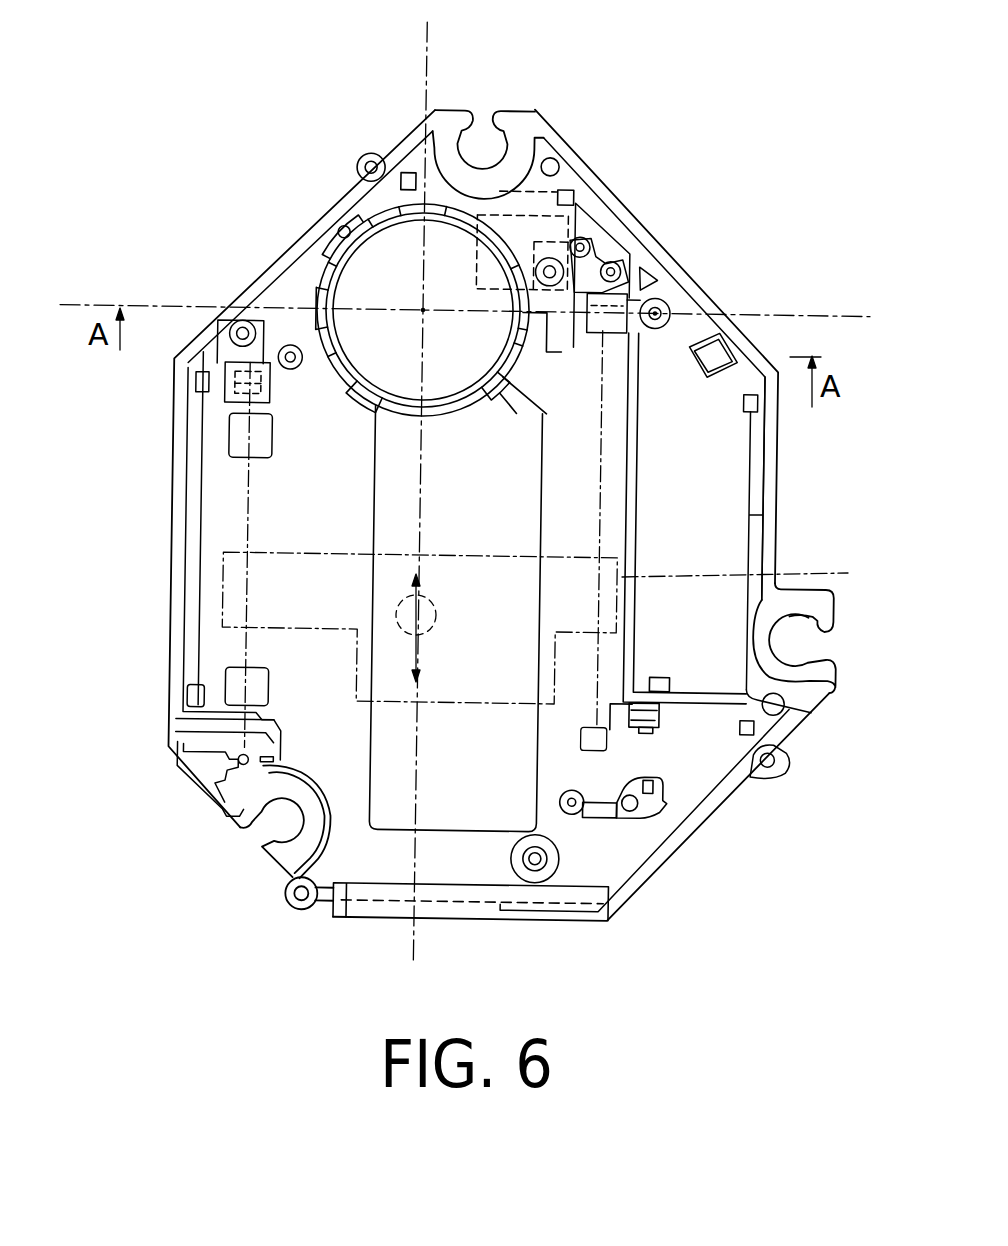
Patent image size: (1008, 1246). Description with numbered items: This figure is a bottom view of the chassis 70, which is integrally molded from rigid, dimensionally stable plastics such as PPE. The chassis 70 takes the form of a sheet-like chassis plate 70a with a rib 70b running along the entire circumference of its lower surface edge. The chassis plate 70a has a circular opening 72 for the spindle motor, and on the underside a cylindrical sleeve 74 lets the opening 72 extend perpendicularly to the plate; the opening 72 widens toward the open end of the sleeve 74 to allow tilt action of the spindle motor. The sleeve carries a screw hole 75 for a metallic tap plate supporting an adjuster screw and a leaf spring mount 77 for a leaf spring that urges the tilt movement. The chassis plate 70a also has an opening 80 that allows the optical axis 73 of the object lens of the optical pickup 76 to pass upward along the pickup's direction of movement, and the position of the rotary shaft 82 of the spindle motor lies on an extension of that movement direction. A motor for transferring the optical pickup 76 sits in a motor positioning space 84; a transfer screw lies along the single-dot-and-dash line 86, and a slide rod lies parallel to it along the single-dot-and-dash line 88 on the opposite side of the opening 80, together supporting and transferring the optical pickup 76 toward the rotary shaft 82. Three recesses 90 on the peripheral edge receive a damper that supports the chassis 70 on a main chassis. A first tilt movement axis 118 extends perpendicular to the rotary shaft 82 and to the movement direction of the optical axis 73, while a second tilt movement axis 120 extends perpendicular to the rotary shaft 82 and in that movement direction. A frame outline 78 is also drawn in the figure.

The chassis 70 is at (544, 514).
The chassis plate 70a is at (717, 538).
The rib 70b is at (773, 447).
The circular opening 72 is at (524, 212).
The optical axis 73 is at (400, 612).
The cylindrical sleeve 74 is at (348, 381).
The screw hole 75 is at (318, 248).
The optical pickup 76 is at (758, 578).
The leaf spring mount 77 is at (496, 400).
The slider frame 78 is at (403, 627).
The opening 80 is at (453, 817).
The rotary shaft 82 is at (421, 310).
The motor positioning space 84 is at (720, 611).
The single-dot-and-dash line 86 is at (600, 398).
The single-dot-and-dash line 88 is at (248, 493).
The recesses 90 is at (493, 168).
The first tilt movement axis 118 is at (828, 316).
The second tilt movement axis 120 is at (425, 40).